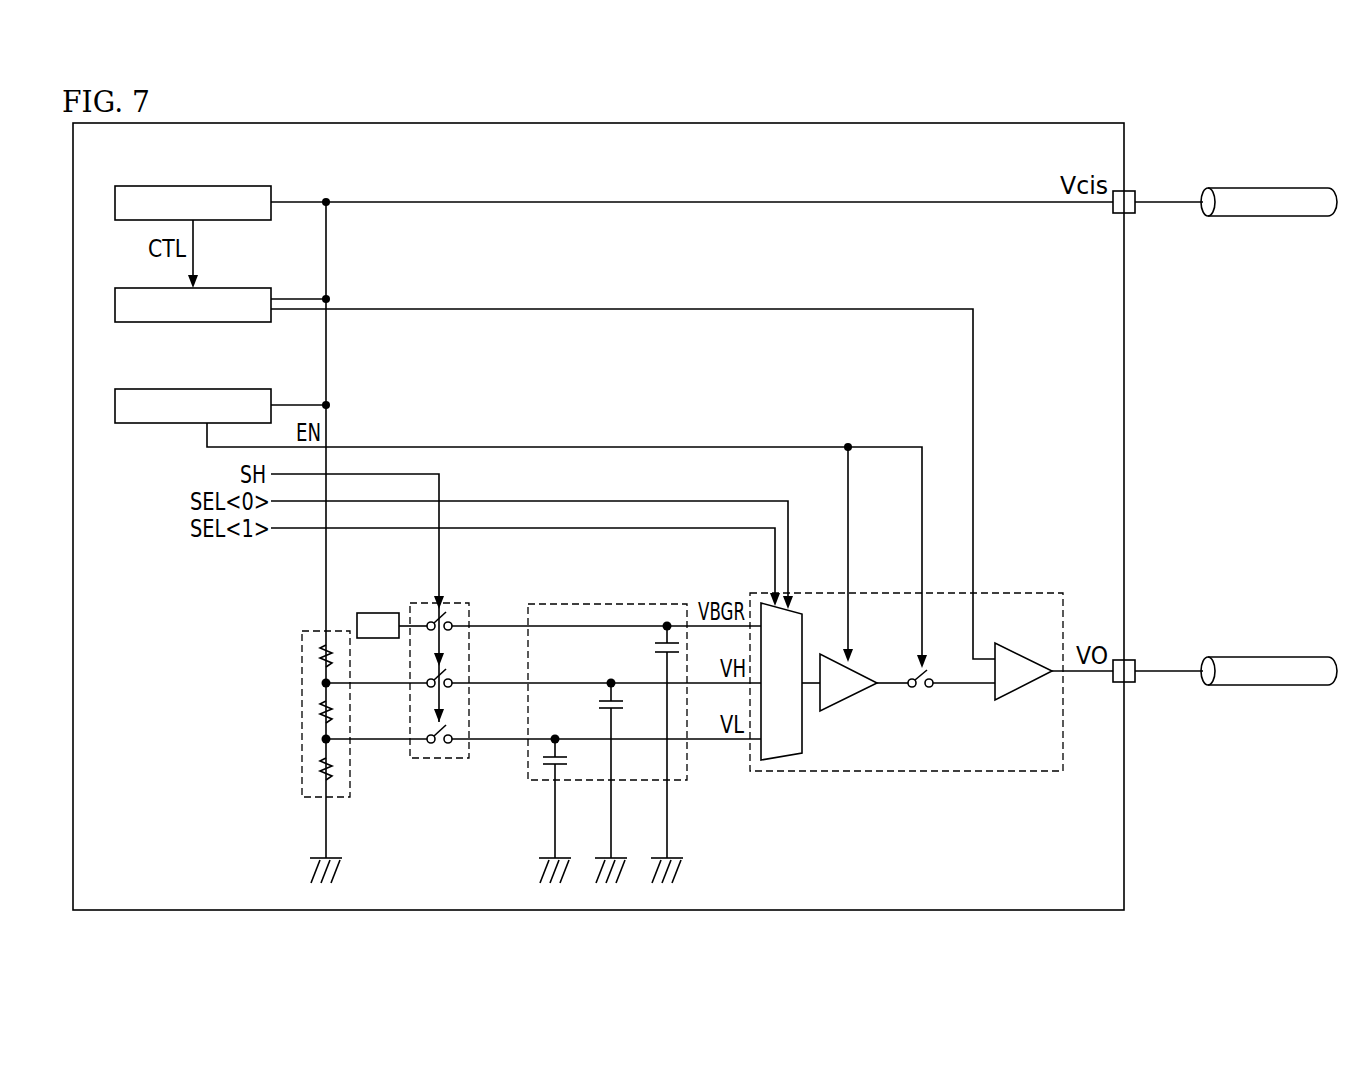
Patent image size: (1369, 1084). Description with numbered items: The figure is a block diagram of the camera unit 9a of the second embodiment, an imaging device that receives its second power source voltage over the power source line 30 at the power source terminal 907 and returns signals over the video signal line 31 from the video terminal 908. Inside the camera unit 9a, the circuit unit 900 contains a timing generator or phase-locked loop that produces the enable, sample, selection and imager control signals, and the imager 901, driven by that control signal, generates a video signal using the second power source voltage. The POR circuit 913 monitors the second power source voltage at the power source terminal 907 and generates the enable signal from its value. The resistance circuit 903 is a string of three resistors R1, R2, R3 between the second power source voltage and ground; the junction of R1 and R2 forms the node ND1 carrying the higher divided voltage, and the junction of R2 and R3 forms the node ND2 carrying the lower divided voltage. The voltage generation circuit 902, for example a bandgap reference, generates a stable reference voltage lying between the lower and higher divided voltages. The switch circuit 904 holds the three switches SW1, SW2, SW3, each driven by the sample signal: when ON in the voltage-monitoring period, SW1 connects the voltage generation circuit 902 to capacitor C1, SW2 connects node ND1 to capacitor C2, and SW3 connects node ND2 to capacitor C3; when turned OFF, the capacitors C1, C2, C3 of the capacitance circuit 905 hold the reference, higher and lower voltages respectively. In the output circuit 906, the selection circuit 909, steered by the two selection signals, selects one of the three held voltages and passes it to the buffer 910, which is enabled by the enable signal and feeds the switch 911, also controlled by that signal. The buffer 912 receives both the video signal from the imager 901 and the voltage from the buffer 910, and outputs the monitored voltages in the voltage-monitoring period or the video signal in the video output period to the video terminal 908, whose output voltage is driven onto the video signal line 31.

The camera unit 9a is at (1018, 123).
The circuit unit 900 is at (256, 186).
The imager 901 is at (256, 288).
The power-on-reset (POR) circuit 913 is at (256, 389).
The voltage generation circuit 902 is at (378, 613).
The resistance circuit 903 is at (330, 741).
The switch circuit 904 is at (466, 702).
The capacitance circuit 905 is at (593, 708).
The output circuit 906 is at (918, 694).
The power source terminal 907 is at (1136, 190).
The video terminal 908 is at (1136, 659).
The selection circuit 909 is at (790, 762).
The buffer 910 is at (845, 701).
The switch 911 is at (920, 690).
The buffer 912 is at (1008, 650).
The power source line 30 is at (1244, 188).
The video signal line 31 is at (1244, 657).
The resistor R1 is at (318, 655).
The resistor R2 is at (318, 712).
The resistor R3 is at (318, 768).
The node ND1 is at (331, 681).
The node ND2 is at (331, 737).
The switch SW1 is at (456, 613).
The switch SW2 is at (456, 670).
The switch SW3 is at (456, 726).
The capacitor C1 is at (656, 645).
The capacitor C2 is at (604, 715).
The capacitor C3 is at (542, 764).